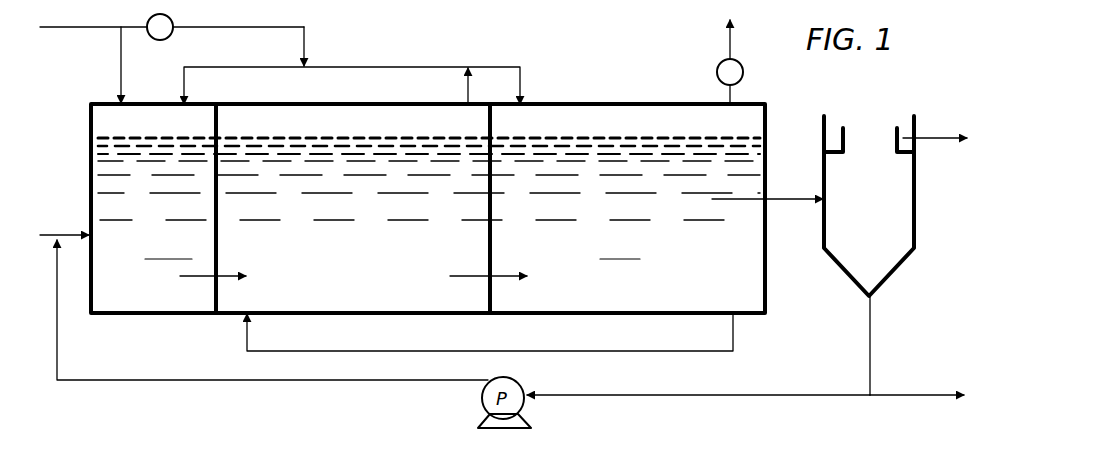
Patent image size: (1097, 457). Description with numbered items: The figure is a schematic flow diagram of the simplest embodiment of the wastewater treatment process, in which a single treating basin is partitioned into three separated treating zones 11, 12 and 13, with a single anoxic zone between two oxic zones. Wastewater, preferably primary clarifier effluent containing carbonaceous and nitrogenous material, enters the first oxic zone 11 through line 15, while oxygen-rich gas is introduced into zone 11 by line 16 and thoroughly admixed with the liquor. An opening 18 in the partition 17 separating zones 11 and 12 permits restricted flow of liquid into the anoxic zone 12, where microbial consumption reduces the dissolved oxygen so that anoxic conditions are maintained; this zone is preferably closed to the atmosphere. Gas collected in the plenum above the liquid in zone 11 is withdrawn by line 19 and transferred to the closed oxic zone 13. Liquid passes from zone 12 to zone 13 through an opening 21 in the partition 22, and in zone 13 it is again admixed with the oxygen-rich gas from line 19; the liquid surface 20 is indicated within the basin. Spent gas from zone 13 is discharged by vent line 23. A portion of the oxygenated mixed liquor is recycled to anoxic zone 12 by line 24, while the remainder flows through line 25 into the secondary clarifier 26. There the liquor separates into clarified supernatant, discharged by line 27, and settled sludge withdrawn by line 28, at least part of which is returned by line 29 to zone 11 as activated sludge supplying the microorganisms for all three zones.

The first treating zone 11 is at (160, 249).
The anoxic zone 12 is at (352, 248).
The oxic zone 13 is at (642, 248).
The inlet line 15 is at (48, 234).
The oxygen gas line 16 is at (98, 28).
The partition 17 is at (218, 225).
The opening 18 is at (190, 277).
The gas transfer line 19 is at (380, 66).
The liquid surface 20 is at (298, 137).
The opening 21 is at (456, 277).
The partition 22 is at (492, 220).
The vent line 23 is at (733, 88).
The recycle line 24 is at (740, 331).
The discharge line 25 is at (785, 198).
The secondary clarifier 26 is at (881, 189).
The clarified liquid discharge line 27 is at (930, 137).
The sludge withdrawal line 28 is at (871, 331).
The sludge recycle line 29 is at (58, 350).